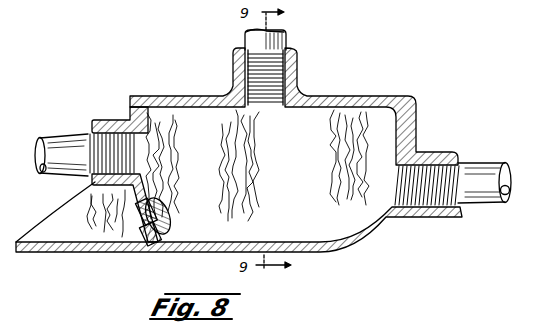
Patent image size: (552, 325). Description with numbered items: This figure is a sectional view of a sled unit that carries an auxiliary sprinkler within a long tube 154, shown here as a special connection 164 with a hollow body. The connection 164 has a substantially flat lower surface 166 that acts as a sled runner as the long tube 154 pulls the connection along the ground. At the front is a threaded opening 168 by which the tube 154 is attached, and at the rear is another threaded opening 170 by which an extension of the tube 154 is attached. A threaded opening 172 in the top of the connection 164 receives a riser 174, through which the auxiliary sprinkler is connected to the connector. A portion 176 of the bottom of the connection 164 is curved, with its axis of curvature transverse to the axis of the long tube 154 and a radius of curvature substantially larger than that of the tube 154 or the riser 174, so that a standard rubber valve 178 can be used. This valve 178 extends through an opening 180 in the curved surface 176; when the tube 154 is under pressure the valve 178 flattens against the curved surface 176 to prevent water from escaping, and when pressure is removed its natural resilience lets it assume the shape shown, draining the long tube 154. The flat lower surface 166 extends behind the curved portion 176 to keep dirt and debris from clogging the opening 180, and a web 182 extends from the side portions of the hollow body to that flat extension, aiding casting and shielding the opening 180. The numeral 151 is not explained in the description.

The valve assembly 151 is at (497, 3).
The long tube 154 is at (61, 136).
The connection 164 is at (368, 82).
The flat lower surface 166 is at (97, 250).
The threaded opening 168 is at (440, 153).
The threaded opening 170 is at (112, 119).
The threaded opening 172 is at (298, 54).
The riser 174 is at (246, 37).
The curved portion 176 is at (139, 184).
The valve 178 is at (164, 216).
The opening 180 is at (147, 247).
The web 182 is at (77, 218).